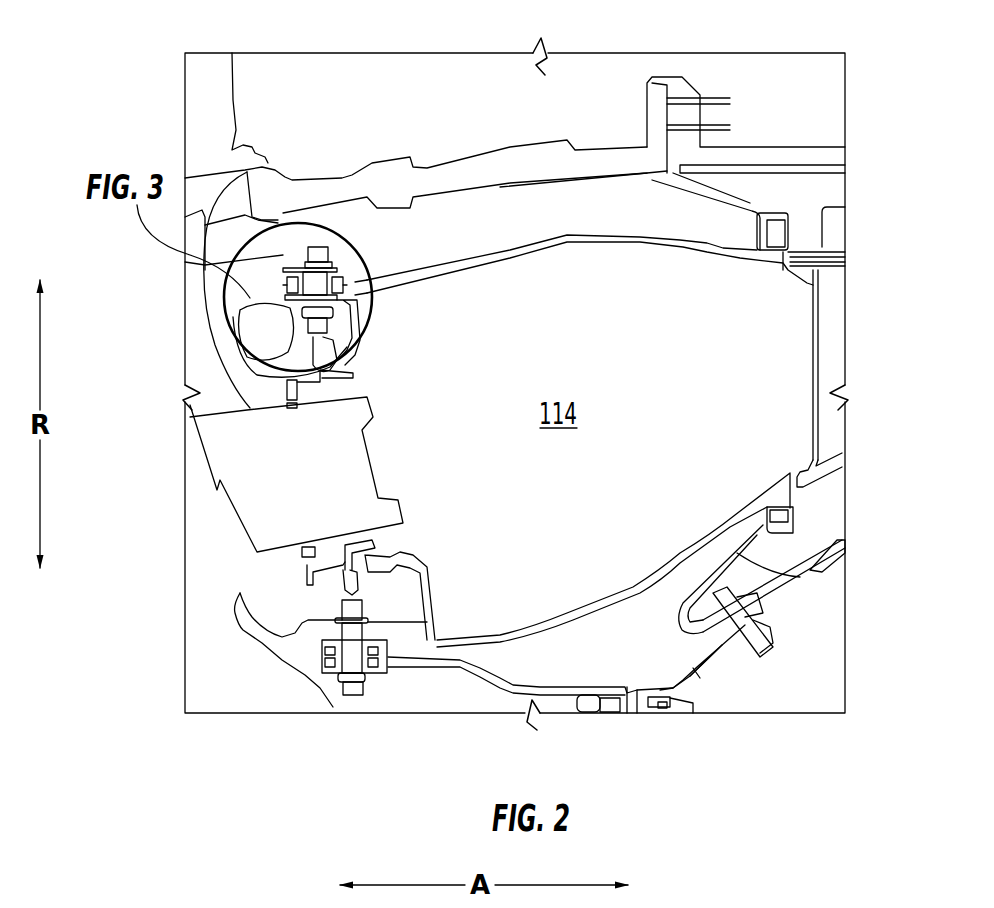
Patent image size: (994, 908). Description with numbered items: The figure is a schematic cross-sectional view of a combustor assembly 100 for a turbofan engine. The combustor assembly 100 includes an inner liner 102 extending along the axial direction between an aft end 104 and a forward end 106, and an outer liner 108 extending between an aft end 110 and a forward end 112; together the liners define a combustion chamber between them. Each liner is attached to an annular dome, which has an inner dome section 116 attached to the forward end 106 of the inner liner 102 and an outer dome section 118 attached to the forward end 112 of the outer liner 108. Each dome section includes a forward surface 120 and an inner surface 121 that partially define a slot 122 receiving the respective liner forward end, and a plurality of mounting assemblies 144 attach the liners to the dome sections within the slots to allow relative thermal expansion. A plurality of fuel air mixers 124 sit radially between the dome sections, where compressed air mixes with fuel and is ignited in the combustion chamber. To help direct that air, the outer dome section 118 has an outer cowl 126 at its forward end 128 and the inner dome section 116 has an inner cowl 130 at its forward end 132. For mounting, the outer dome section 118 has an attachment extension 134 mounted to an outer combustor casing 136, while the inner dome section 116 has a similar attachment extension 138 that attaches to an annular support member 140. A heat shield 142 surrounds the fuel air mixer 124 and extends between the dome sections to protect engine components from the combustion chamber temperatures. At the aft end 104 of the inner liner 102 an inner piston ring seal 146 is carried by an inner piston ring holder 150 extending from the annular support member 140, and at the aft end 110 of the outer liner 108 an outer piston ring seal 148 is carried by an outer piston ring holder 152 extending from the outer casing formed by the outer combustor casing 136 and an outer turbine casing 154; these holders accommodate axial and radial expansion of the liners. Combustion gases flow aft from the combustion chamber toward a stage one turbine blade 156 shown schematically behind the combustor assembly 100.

The combustor assembly 100 is at (588, 90).
The inner liner 102 is at (645, 580).
The aft end of inner liner 104 is at (757, 477).
The forward end of inner liner 106 is at (378, 670).
The outer liner 108 is at (567, 237).
The aft end of outer liner 110 is at (762, 272).
The forward end of outer liner 112 is at (290, 258).
The inner dome section 116 is at (302, 650).
The outer dome section 118 is at (250, 300).
The forward surface 120 is at (348, 292).
The inner surface 121 is at (305, 320).
The slot 122 is at (348, 269).
The fuel air mixer 124 is at (283, 473).
The outer cowl 126 is at (218, 322).
The forward end of outer dome section 128 is at (205, 316).
The inner cowl 130 is at (245, 630).
The forward end of inner dome section 132 is at (252, 659).
The attachment extension 134 is at (190, 228).
The outer combustor casing 136 is at (520, 173).
The attachment extension 138 is at (512, 683).
The annular support member 140 is at (697, 670).
The heat shield 142 is at (368, 338).
The mounting assembly 144 is at (320, 242).
The inner piston ring seal 146 is at (793, 507).
The outer piston ring seal 148 is at (787, 240).
The inner piston ring holder 150 is at (805, 578).
The outer piston ring holder 152 is at (733, 197).
The outer turbine casing 154 is at (735, 150).
The stage one turbine blade 156 is at (828, 334).